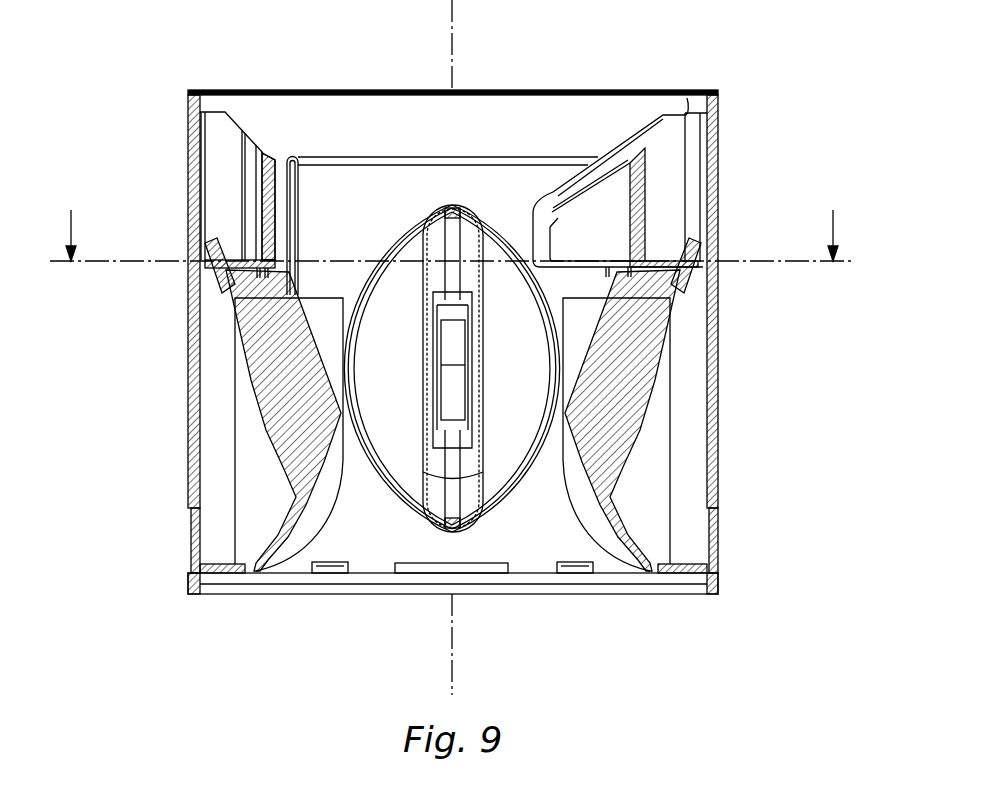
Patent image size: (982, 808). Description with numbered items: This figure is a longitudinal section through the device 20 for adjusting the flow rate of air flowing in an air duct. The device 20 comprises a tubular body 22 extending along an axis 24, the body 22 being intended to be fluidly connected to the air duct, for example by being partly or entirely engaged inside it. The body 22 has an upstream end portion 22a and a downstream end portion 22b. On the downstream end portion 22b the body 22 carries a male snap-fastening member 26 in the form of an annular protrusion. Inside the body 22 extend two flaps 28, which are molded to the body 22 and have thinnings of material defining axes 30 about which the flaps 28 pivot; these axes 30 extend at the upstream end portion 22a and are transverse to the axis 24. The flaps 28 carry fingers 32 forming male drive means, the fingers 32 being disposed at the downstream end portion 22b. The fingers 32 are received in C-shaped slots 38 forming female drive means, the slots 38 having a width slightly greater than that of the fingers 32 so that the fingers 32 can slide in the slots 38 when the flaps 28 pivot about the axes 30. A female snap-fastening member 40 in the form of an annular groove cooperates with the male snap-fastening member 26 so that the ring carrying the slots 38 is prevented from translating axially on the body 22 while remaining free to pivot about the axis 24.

The device 20 is at (694, 56).
The tubular body 22 is at (719, 119).
The upstream end portion 22a is at (190, 527).
The downstream end portion 22b is at (192, 208).
The axis 24 is at (455, 20).
The male snap-fastening member 26 is at (192, 183).
The flaps 28 is at (290, 430).
The axes 30 is at (246, 575).
The fingers 32 is at (212, 283).
The C-shaped slots 38 is at (222, 250).
The female snap-fastening member 40 is at (192, 134).